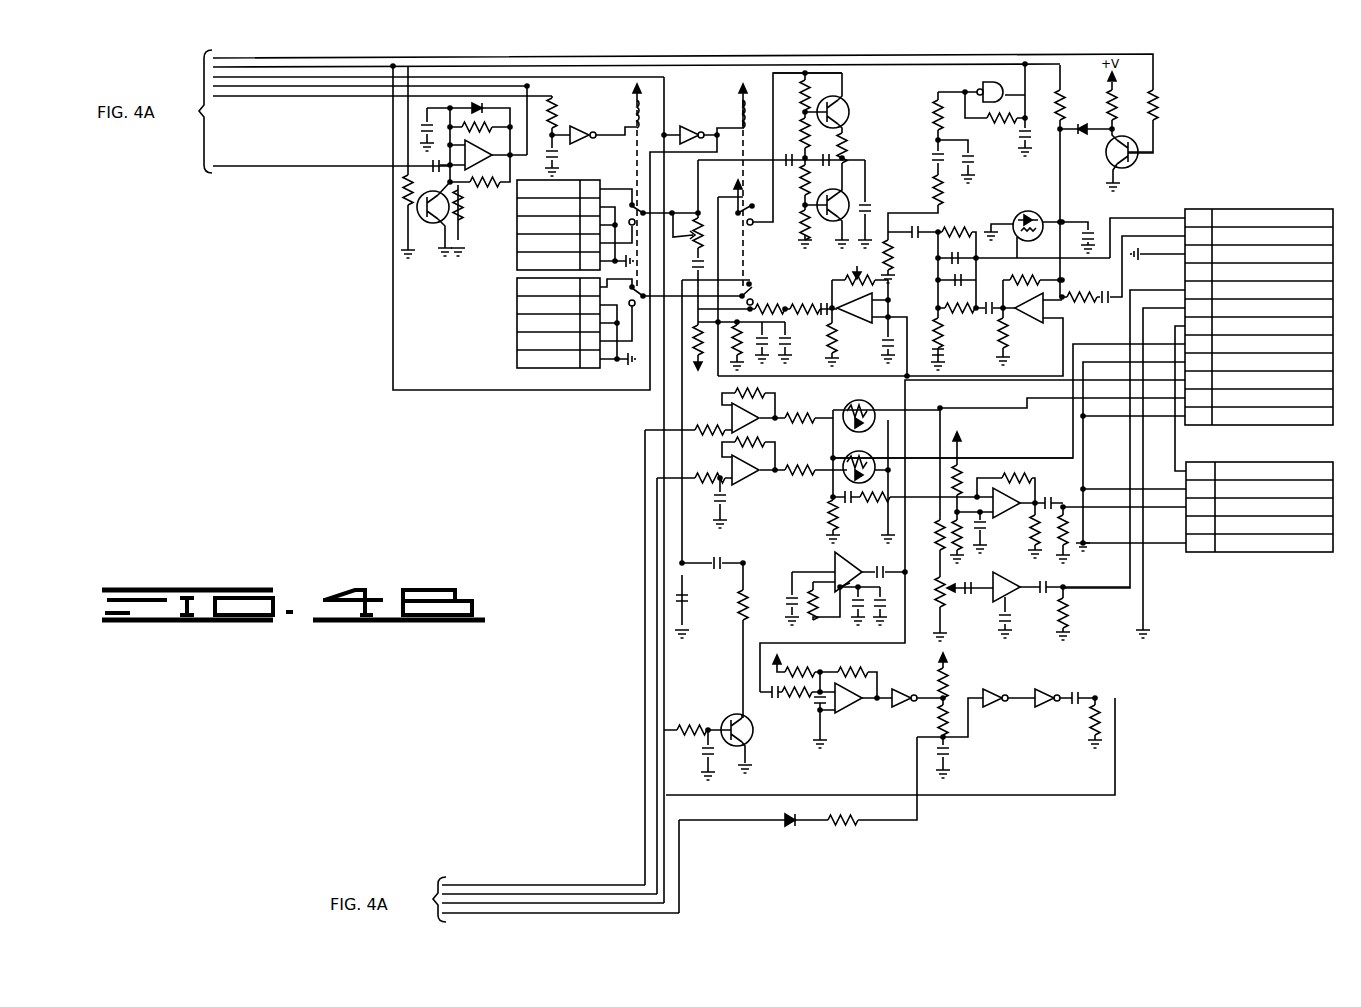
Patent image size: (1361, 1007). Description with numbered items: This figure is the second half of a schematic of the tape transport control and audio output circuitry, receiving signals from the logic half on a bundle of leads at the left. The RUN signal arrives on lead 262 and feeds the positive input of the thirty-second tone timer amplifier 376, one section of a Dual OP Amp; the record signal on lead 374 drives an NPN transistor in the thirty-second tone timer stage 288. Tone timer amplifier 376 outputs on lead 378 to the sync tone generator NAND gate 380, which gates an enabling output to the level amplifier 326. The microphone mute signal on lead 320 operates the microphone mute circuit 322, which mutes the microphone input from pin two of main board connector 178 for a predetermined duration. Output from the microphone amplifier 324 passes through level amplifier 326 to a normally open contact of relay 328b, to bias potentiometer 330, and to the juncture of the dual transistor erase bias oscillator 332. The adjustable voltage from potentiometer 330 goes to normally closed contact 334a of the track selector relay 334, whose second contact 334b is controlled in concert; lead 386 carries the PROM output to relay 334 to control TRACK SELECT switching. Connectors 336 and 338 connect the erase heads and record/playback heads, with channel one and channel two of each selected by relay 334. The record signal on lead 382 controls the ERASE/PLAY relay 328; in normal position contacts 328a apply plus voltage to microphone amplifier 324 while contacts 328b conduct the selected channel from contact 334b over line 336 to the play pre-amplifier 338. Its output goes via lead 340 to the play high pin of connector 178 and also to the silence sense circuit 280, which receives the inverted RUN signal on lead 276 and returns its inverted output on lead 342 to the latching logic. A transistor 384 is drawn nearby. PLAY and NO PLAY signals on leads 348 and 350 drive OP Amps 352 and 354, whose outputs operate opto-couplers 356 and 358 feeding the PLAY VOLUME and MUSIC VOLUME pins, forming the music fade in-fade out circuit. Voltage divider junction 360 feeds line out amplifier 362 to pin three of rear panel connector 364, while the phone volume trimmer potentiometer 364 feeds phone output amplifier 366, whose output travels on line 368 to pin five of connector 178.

The main board connector 178 is at (1255, 209).
The lead 262 is at (270, 166).
The lead 276 is at (682, 884).
The silence sense circuit 280 is at (903, 741).
The 30-second tone timer stage 288 is at (510, 218).
The lead 320 is at (220, 58).
The microphone mute circuit 322 is at (1112, 289).
The microphone amplifier 324 is at (1054, 349).
The level amplifier 326 is at (877, 349).
The ERASE/PLAY relay 328 is at (735, 117).
The relay contacts 328a is at (785, 224).
The relay contact 328b is at (759, 325).
The bias potentiometer 330 is at (690, 250).
The dual transistor erase bias oscillator 332 is at (885, 148).
The track selector relay 334 is at (612, 115).
The normal closed contact 334a is at (612, 180).
The normal closed contact 334b is at (643, 296).
The connector 336 is at (517, 247).
The connector 338 is at (517, 333).
The lead 340 is at (956, 388).
The lead 342 is at (533, 903).
The lead 348 is at (450, 885).
The lead 350 is at (473, 894).
The OP Amp 352 is at (752, 424).
The OP Amp 354 is at (746, 482).
The opto-coupler 356 is at (848, 397).
The opto-coupler 358 is at (851, 452).
The voltage divider junction 360 is at (828, 500).
The line out amplifier 362 is at (1033, 522).
The rear panel connector 364 is at (1262, 462).
The phone output amplifier 366 is at (1025, 560).
The line 368 is at (1088, 592).
The lead 374 is at (247, 67).
The tone timer amplifier 376 is at (490, 162).
The lead 378 is at (322, 86).
The sync tone generator NAND gate 380 is at (985, 82).
The lead 382 is at (233, 78).
The transistor 384 is at (729, 724).
The lead 386 is at (308, 96).